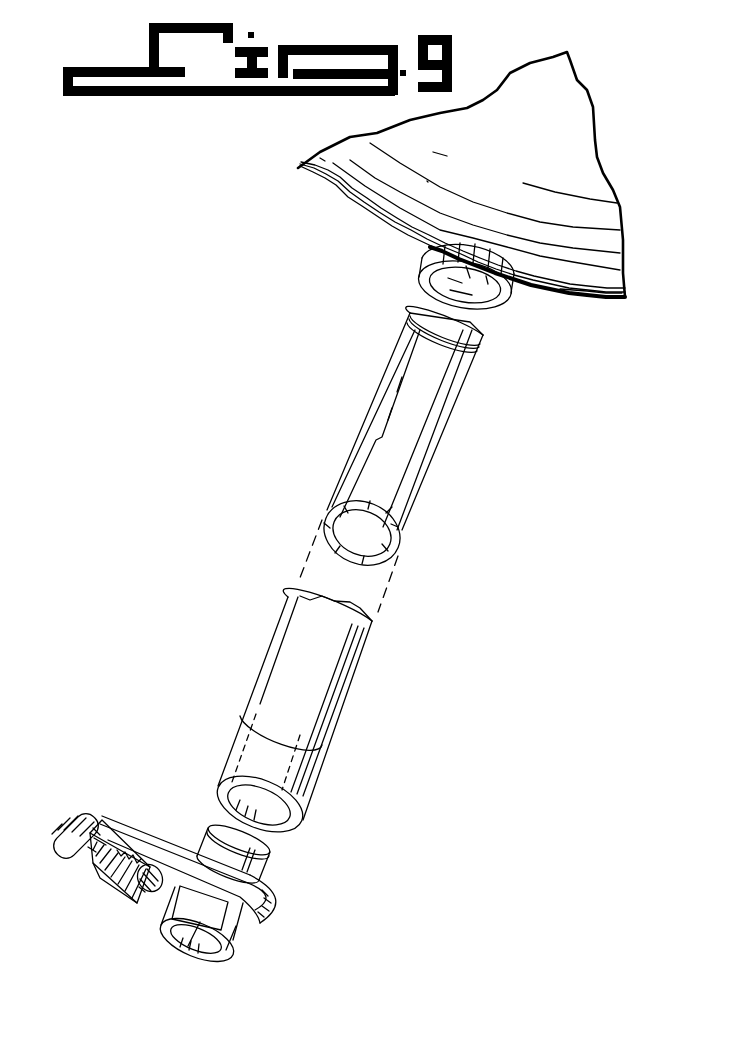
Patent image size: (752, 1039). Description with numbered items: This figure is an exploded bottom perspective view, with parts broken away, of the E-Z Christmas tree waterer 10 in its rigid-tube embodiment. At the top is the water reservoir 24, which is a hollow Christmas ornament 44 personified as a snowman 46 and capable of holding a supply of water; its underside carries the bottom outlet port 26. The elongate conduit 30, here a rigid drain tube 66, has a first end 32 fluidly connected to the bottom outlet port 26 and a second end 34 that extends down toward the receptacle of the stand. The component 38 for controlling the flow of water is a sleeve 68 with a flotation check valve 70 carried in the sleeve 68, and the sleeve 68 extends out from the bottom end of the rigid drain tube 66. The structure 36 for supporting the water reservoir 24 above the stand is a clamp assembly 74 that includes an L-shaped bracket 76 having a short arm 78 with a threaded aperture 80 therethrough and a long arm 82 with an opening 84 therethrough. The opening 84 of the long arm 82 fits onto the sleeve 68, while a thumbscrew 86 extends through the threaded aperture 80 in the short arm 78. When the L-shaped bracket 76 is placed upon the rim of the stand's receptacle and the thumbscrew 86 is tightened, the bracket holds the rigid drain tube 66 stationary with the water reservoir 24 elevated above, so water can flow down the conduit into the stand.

The E-Z Christmas tree waterer 10 is at (468, 517).
The water reservoir 24 is at (548, 288).
The bottom outlet port 26 is at (420, 280).
The elongate conduit 30 is at (270, 643).
The first end 32 is at (398, 320).
The second end 34 is at (300, 835).
The structure for supporting the water reservoir 36 is at (145, 820).
The component for controlling the flow 38 is at (194, 950).
The hollow Christmas ornament 44 is at (324, 192).
The snowman 46 is at (600, 297).
The rigid drain tube 66 is at (380, 436).
The sleeve 68 is at (270, 866).
The flotation check valve 70 is at (258, 936).
The clamp assembly 74 is at (116, 802).
The L-shaped bracket 76 is at (113, 890).
The short arm 78 is at (83, 861).
The threaded aperture 80 is at (113, 885).
The long arm 82 is at (177, 863).
The opening 84 is at (167, 898).
The thumbscrew 86 is at (65, 817).